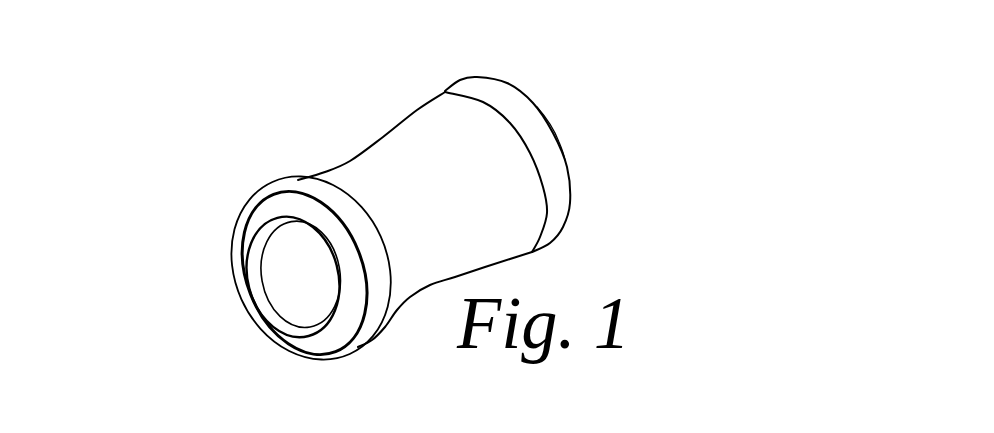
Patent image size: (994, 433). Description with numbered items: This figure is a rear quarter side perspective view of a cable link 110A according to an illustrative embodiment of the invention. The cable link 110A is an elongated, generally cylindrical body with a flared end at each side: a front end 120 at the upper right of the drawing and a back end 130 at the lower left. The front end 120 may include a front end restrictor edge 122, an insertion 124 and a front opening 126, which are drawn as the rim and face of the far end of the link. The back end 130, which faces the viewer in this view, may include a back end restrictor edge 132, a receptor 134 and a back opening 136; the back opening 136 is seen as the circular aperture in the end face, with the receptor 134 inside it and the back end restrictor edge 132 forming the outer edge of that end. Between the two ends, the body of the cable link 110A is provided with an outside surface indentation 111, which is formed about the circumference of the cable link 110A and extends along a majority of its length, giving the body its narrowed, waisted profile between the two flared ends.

The cable link 110A is at (485, 180).
The outside surface indentation 111 is at (375, 148).
The front end 120 is at (716, 50).
The front end restrictor edge 122 is at (507, 80).
The insertion 124 is at (562, 140).
The front opening 126 is at (567, 98).
The back end 130 is at (227, 268).
The back end restrictor edge 132 is at (247, 223).
The receptor 134 is at (297, 323).
The back opening 136 is at (236, 307).